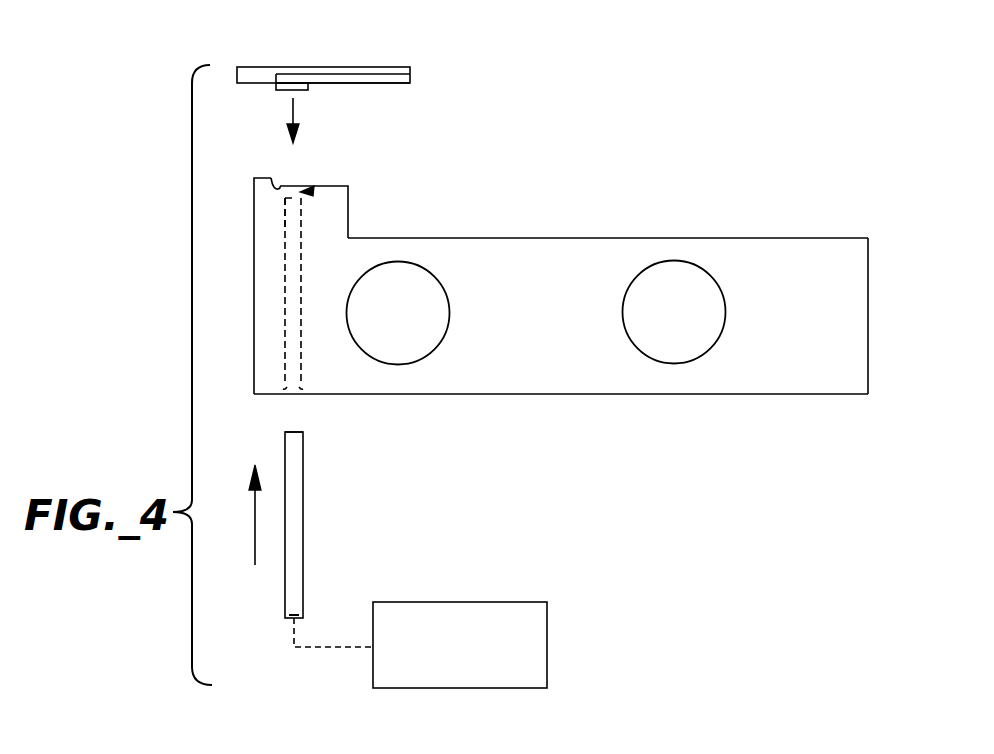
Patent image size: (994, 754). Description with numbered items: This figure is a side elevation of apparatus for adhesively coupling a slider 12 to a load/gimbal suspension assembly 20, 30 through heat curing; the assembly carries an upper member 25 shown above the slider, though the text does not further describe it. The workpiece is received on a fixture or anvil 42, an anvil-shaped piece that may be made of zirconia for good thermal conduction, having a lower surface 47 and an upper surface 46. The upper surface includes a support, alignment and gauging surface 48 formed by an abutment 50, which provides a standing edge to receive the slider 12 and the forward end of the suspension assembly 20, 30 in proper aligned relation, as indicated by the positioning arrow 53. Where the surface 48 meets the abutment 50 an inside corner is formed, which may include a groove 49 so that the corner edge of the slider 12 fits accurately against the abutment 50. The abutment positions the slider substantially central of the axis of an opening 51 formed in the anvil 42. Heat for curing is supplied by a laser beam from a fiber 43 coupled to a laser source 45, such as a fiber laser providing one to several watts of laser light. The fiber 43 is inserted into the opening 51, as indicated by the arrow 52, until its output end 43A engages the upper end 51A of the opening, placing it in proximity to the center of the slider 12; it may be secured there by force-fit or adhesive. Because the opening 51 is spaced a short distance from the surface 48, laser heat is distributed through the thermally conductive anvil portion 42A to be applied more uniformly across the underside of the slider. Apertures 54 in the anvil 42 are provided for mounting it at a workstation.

The slider 12 is at (282, 90).
The load/gimbal suspension assembly 20 is at (398, 67).
The carrier plate 25 is at (257, 67).
The load/gimbal suspension assembly 30 is at (400, 83).
The fixture or anvil 42 is at (652, 152).
The thermally conductive anvil portion 42A is at (312, 191).
The fiber 43 is at (303, 550).
The output end of fiber 43A is at (297, 432).
The laser source 45 is at (478, 602).
The upper surface 46 is at (743, 238).
The lower surface 47 is at (542, 394).
The support, alignment and gauging surface 48 is at (325, 186).
The groove 49 is at (276, 186).
The abutment 50 is at (268, 178).
The opening 51 is at (298, 305).
The upper end of opening 51A is at (285, 226).
The arrow 52 is at (255, 532).
The positioning arrow 53 is at (293, 112).
The apertures 54 is at (437, 290).